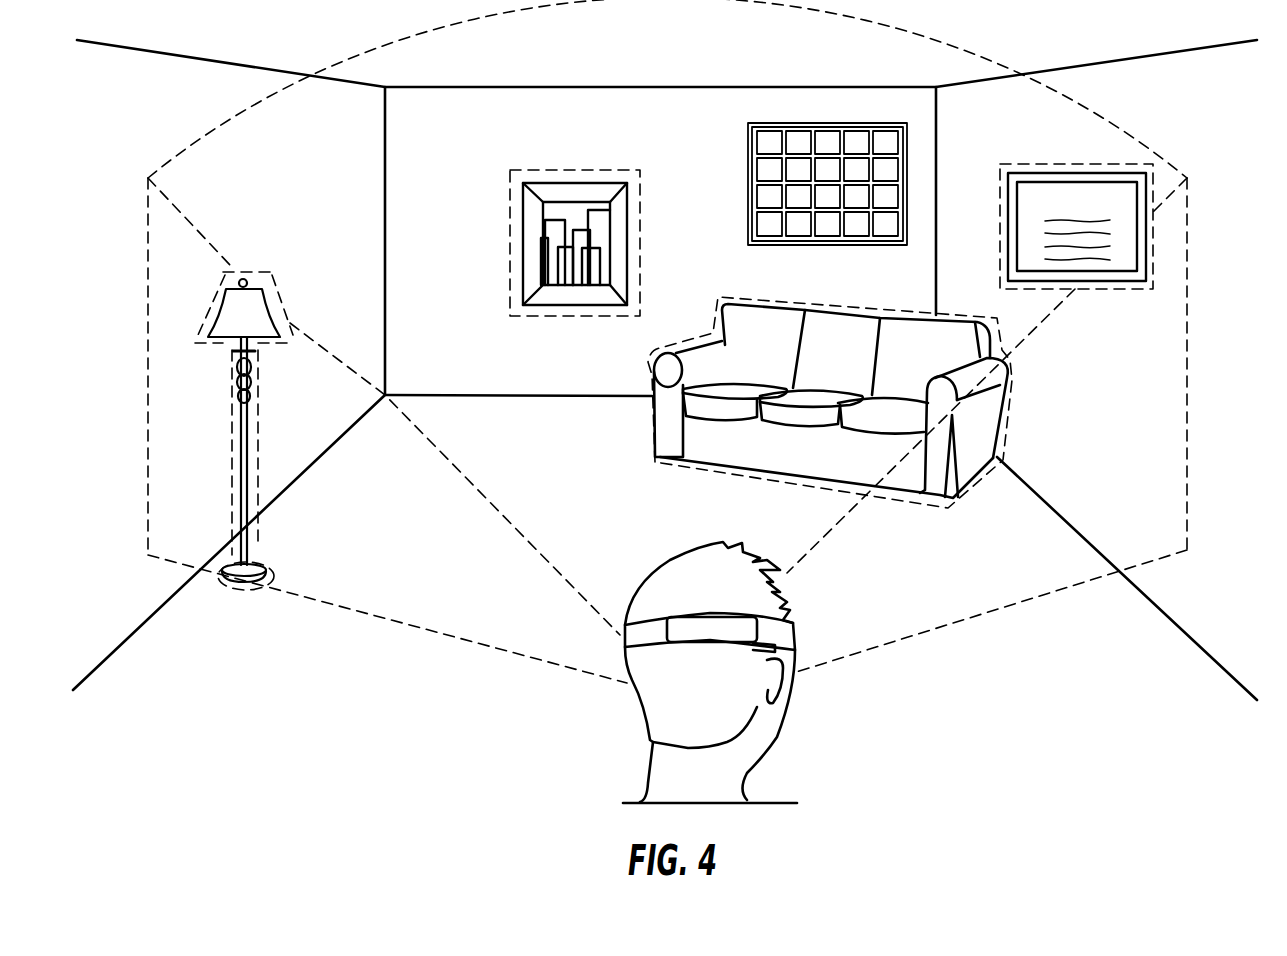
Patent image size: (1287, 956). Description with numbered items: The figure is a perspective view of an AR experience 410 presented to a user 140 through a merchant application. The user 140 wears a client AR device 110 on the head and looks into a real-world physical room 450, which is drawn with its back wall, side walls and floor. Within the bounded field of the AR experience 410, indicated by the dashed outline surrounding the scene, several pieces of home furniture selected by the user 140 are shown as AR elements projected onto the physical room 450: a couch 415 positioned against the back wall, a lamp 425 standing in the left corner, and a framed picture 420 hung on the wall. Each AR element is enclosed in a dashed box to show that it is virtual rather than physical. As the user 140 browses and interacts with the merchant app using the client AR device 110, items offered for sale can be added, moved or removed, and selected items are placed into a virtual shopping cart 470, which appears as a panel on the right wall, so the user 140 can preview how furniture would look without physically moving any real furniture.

The client AR device 110 is at (797, 637).
The user 140 is at (747, 793).
The AR experience 410 is at (1187, 410).
The couch 415 is at (998, 410).
The framed picture 420 is at (640, 240).
The lamp 425 is at (258, 550).
The real-world physical room 450 is at (578, 474).
The virtual shopping cart 470 is at (1153, 243).